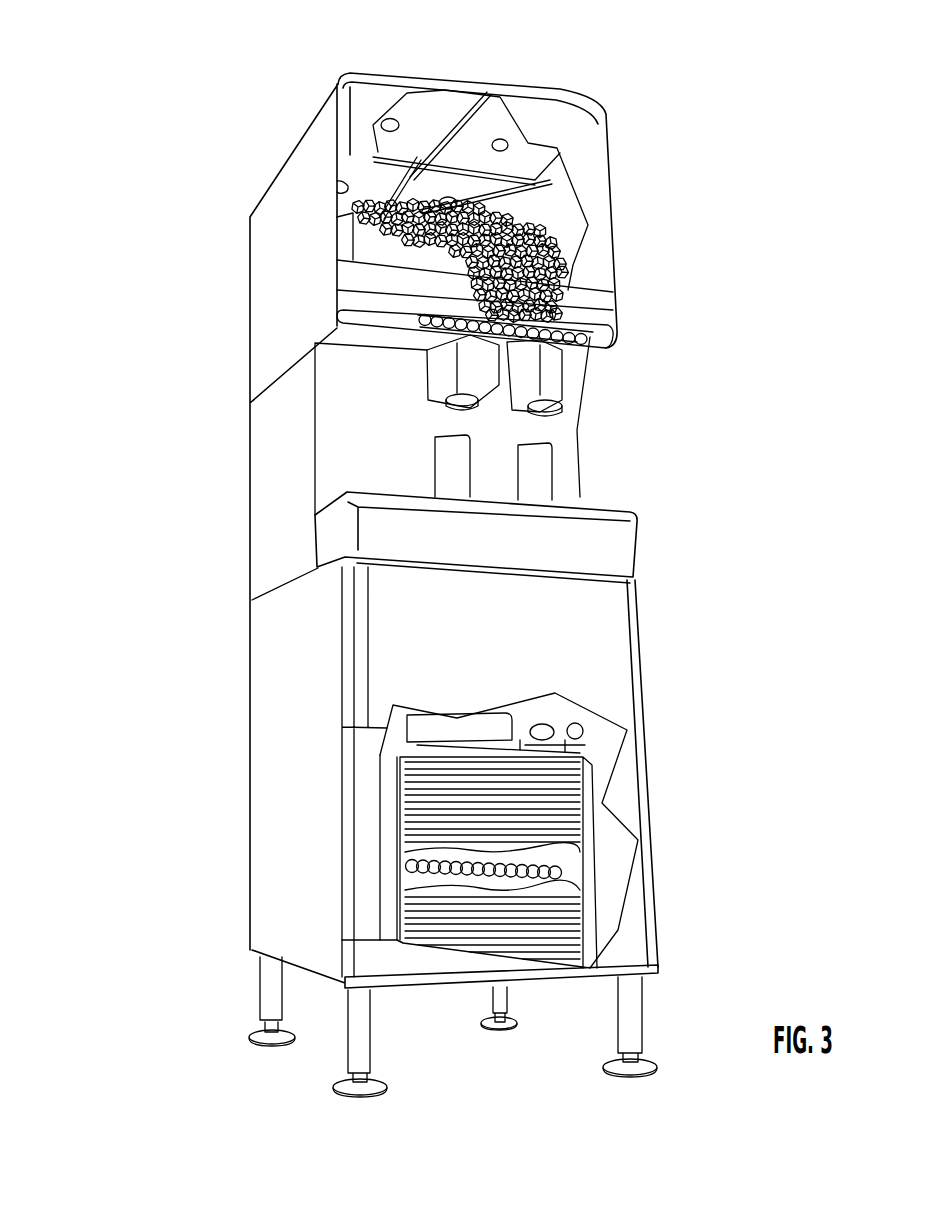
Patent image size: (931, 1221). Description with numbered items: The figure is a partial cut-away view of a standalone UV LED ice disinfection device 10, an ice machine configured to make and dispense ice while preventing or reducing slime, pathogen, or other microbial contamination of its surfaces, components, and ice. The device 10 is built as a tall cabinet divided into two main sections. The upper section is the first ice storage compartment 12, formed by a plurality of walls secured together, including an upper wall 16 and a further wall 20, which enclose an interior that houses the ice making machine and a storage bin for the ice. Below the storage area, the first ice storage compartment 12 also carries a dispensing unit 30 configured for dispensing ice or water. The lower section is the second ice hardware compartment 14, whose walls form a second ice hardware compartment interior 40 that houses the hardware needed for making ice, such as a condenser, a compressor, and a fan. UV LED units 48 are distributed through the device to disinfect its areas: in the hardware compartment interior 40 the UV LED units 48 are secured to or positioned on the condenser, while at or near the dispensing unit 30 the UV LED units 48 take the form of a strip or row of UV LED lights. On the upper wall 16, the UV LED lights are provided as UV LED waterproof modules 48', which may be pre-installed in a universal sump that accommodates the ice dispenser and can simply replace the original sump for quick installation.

The UV LED ice disinfection device 10 is at (138, 467).
The first ice storage compartment 12 is at (605, 234).
The second ice hardware compartment 14 is at (633, 670).
The upper wall 16 is at (485, 117).
The wall 20 is at (558, 215).
The dispensing unit 30 is at (573, 380).
The second ice hardware compartment interior 40 is at (603, 745).
The UV LED units 48 is at (548, 593).
The UV LED waterproof modules 48' is at (325, 70).